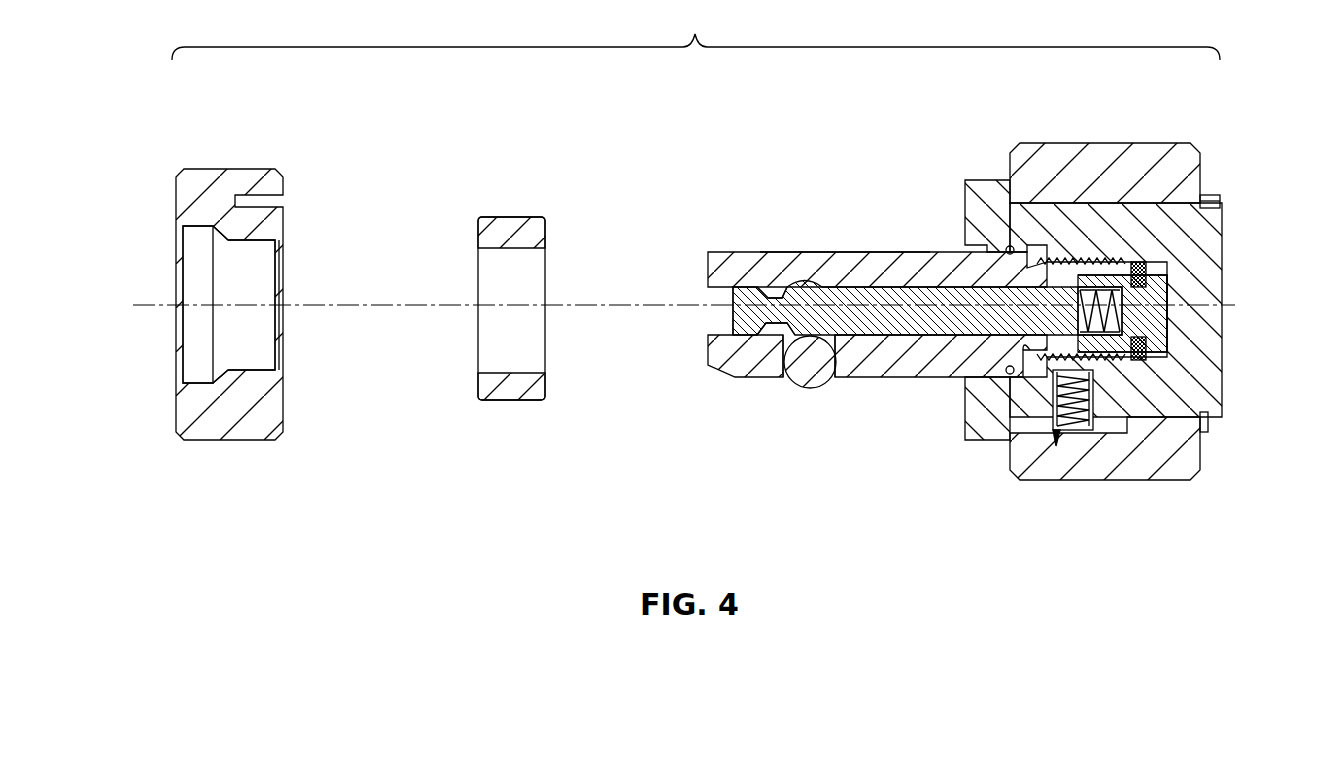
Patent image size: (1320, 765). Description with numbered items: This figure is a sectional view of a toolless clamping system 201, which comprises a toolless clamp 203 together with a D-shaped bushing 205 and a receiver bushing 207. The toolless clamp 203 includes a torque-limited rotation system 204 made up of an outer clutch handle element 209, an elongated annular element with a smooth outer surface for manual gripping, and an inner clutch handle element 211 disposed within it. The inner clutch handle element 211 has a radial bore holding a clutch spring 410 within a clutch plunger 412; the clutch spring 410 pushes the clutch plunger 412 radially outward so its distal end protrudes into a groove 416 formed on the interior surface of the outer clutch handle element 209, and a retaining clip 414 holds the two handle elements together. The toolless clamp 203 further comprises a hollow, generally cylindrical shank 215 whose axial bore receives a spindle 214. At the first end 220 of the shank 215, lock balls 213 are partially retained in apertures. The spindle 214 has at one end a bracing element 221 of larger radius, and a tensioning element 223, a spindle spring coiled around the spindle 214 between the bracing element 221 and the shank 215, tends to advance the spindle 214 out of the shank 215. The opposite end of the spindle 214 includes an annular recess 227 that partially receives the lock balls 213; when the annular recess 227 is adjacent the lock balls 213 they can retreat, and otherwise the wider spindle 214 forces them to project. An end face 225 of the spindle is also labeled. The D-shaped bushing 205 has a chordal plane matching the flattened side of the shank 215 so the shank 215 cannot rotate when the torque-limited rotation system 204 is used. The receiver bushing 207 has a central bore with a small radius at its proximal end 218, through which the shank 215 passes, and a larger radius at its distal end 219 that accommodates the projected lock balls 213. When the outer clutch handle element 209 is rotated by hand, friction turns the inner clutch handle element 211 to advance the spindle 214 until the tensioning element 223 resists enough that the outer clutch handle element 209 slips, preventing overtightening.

The toolless clamping system 201 is at (696, 30).
The toolless clamp 203 is at (985, 180).
The torque-limited rotation system 204 is at (1210, 380).
The D-shaped bushing 205 is at (512, 236).
The receiver bushing 207 is at (228, 205).
The outer clutch handle element 209 is at (1175, 175).
The inner clutch handle element 211 is at (1062, 233).
The lock ball 213 is at (815, 370).
The spindle 214 is at (870, 296).
The shank 215 is at (846, 262).
The proximal end 218 is at (260, 337).
The distal end 219 is at (198, 350).
The first end 220 is at (708, 268).
The bracing element 221 is at (1183, 272).
The tensioning element 223 is at (1093, 270).
The pin end face 225 is at (733, 318).
The annular recess 227 is at (772, 293).
The clutch spring 410 is at (1085, 432).
The clutch plunger 412 is at (1056, 446).
The retaining clip 414 is at (1213, 202).
The groove 416 is at (1115, 427).